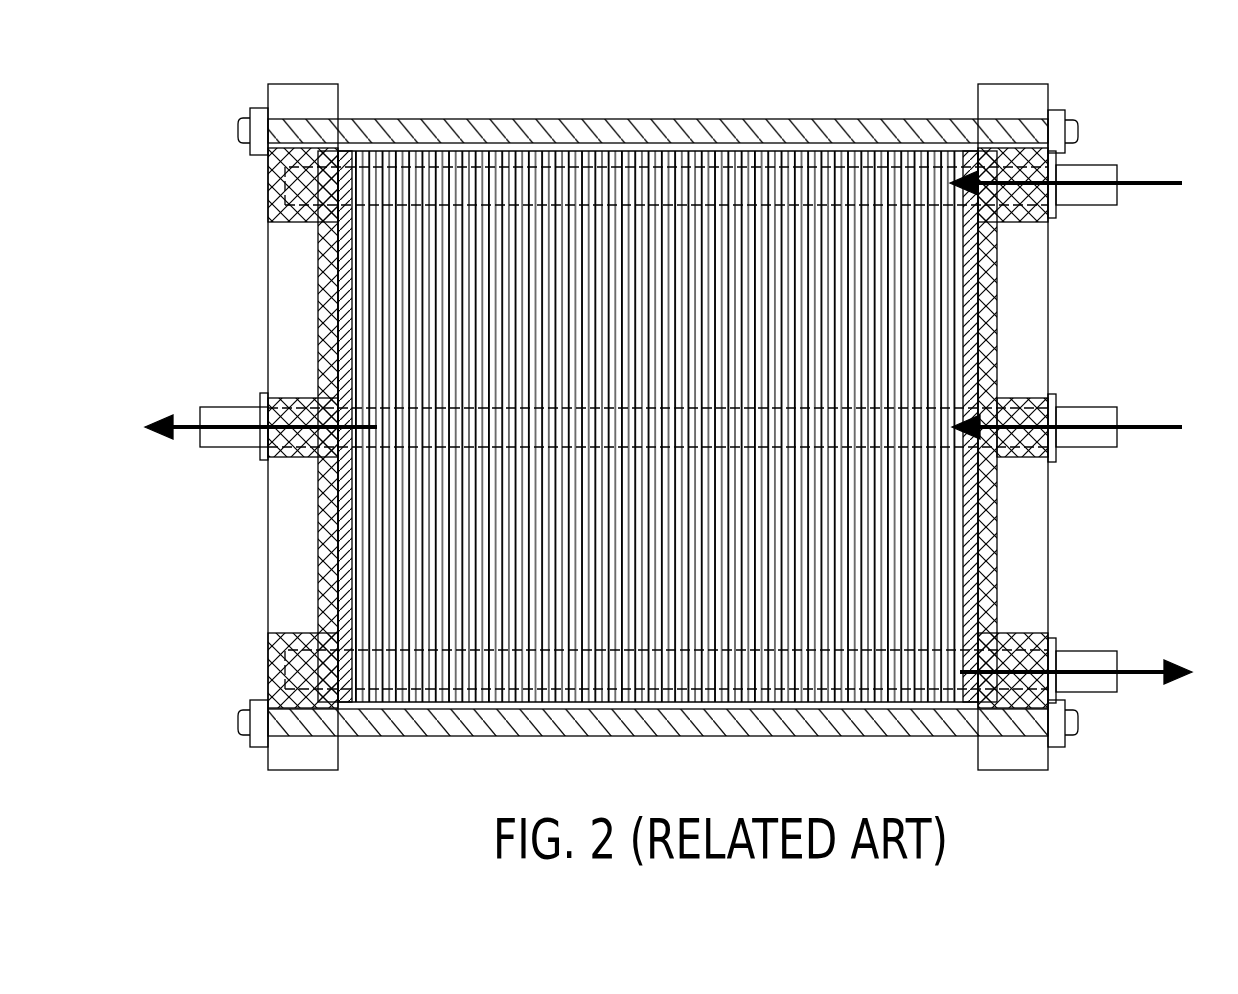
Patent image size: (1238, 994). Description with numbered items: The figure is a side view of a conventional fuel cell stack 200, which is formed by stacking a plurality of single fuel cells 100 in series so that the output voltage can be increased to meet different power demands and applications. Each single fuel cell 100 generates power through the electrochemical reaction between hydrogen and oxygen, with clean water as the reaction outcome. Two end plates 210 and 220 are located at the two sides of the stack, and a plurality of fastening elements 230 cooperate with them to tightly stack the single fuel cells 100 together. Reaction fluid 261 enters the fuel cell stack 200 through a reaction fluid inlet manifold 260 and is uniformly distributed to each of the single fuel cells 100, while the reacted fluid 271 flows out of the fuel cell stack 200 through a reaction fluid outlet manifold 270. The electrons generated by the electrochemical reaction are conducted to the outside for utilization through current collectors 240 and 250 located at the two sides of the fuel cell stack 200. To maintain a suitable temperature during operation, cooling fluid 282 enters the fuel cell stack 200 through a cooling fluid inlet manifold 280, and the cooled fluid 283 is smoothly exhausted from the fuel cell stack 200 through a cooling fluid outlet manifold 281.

The single fuel cell 100 is at (738, 162).
The fuel cell stack 200 is at (1201, 796).
The end plate 210 is at (300, 97).
The end plate 220 is at (1033, 97).
The fastening element 230 is at (518, 135).
The current collector 240 is at (345, 297).
The current collector 250 is at (973, 545).
The reaction fluid inlet manifold 260 is at (1028, 175).
The reaction fluid 261 is at (1158, 183).
The reaction fluid outlet manifold 270 is at (1035, 662).
The reacted fluid 271 is at (1135, 672).
The cooling fluid inlet manifold 280 is at (1035, 418).
The cooling fluid outlet manifold 281 is at (263, 418).
The cooling fluid 282 is at (1157, 427).
The cooled fluid 283 is at (180, 423).